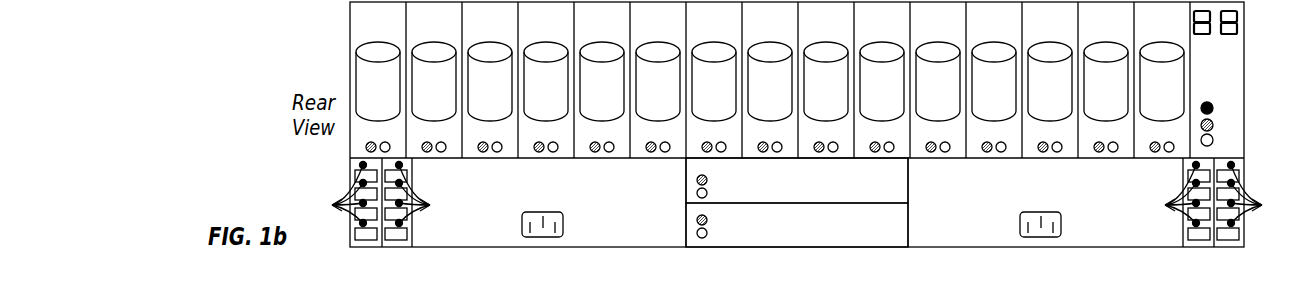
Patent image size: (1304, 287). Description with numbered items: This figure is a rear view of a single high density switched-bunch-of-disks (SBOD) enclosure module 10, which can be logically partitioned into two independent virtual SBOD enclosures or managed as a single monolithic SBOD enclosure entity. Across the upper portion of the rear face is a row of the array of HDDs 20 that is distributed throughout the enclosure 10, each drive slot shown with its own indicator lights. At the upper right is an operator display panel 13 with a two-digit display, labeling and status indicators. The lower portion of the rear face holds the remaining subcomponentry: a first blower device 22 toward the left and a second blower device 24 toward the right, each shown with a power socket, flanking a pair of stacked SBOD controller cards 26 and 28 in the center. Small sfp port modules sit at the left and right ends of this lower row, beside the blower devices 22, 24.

The high density SBOD enclosure module 10 is at (350, 27).
The operator display panel 13 is at (1233, 123).
The HDDs 20 is at (390, 98).
The blower device 22 is at (638, 230).
The blower device 24 is at (1108, 232).
The SBOD controller card 26 is at (892, 190).
The SBOD controller card 28 is at (783, 240).